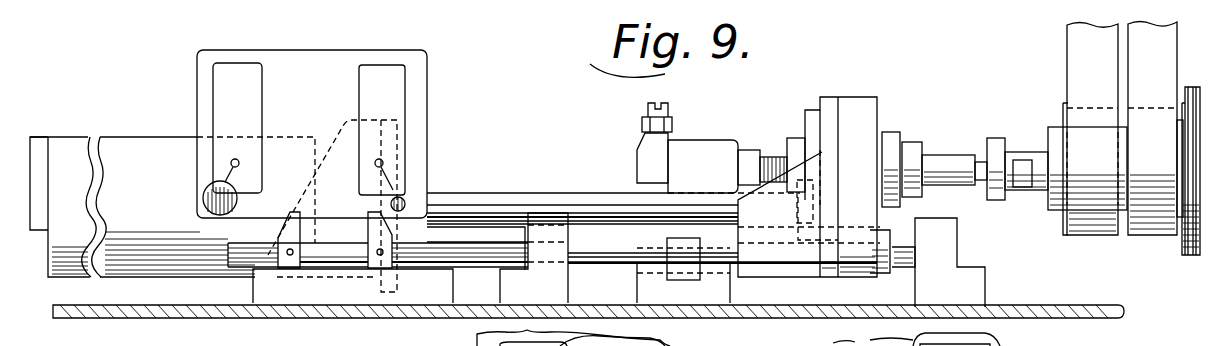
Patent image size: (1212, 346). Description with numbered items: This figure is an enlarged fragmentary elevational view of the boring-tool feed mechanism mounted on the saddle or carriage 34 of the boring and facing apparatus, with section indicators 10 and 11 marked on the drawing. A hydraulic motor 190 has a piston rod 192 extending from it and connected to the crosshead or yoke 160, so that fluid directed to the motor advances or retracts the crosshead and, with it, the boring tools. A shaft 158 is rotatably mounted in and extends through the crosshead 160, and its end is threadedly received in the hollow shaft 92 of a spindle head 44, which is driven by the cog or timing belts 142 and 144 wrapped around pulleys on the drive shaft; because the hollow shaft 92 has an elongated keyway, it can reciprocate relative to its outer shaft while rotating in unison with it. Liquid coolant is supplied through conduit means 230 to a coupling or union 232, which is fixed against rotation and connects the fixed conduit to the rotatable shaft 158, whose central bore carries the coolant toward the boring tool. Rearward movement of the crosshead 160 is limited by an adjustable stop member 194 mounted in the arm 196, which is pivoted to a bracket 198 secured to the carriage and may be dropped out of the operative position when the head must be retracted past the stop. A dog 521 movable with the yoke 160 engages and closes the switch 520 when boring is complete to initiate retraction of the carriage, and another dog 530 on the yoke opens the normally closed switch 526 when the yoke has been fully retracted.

The workpiece axis / section indicator 10 is at (560, 185).
The section line indicator 11 is at (58, 340).
The saddle or carriage 34 is at (1116, 324).
The spindle head 44 is at (1178, 256).
The hollow shaft 92 is at (1037, 193).
The timing belt 142 is at (1140, 62).
The timing belt 144 is at (1078, 47).
The shaft 158 is at (935, 160).
The crosshead or yoke 160 is at (875, 69).
The hydraulic motor 190 is at (135, 150).
The piston rod 192 is at (591, 203).
The adjustable stop member 194 is at (1004, 341).
The arm 196 is at (667, 278).
The bracket 198 is at (720, 293).
The conduit means 230 is at (662, 108).
The coupling or union 232 is at (710, 150).
The switch 520 is at (376, 72).
The dog 521 is at (380, 255).
The switch 526 is at (232, 72).
The dog 530 is at (268, 255).